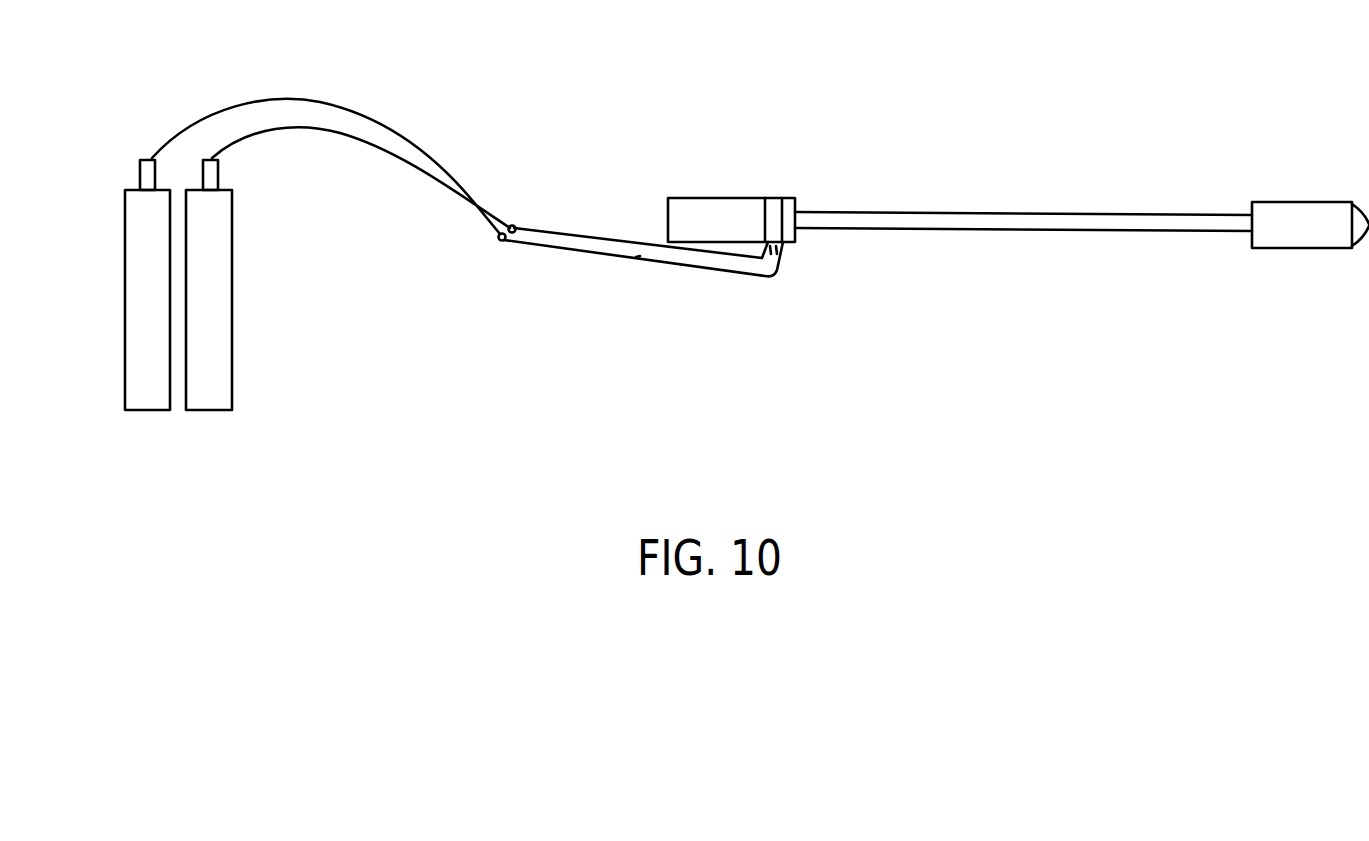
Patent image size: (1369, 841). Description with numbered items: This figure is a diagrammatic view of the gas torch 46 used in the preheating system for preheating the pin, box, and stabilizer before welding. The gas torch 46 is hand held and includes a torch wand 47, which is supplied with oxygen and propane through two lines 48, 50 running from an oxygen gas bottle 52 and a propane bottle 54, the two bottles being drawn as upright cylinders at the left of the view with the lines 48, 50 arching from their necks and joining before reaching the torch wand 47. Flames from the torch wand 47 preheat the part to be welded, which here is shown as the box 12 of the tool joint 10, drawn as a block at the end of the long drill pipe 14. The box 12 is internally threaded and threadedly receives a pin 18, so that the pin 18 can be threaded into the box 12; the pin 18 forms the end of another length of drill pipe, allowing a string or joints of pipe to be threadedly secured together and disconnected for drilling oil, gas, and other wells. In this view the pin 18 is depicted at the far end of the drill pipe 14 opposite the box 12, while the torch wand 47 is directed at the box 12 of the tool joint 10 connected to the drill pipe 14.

The tool joint 10 is at (1018, 139).
The box 12 is at (752, 198).
The drill pipe 14 is at (1068, 215).
The pin 18 is at (1307, 202).
The gas torch 46 is at (577, 232).
The torch wand 47 is at (630, 256).
The line 48 is at (380, 121).
The line 50 is at (353, 137).
The oxygen gas bottle 52 is at (145, 402).
The propane bottle 54 is at (205, 402).